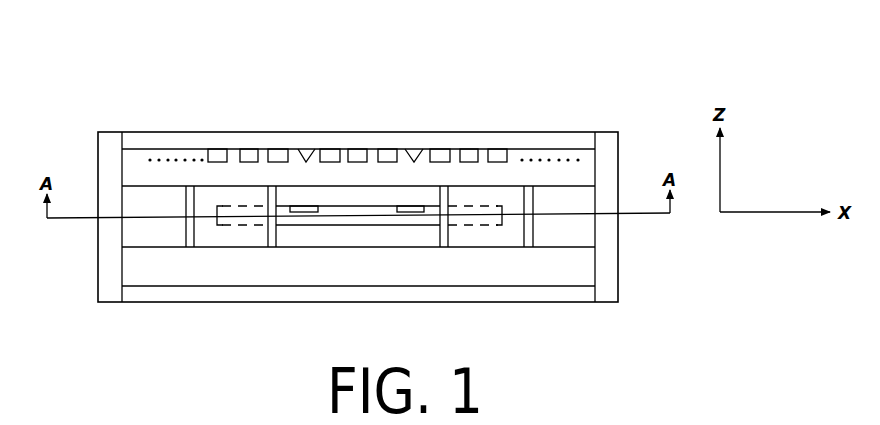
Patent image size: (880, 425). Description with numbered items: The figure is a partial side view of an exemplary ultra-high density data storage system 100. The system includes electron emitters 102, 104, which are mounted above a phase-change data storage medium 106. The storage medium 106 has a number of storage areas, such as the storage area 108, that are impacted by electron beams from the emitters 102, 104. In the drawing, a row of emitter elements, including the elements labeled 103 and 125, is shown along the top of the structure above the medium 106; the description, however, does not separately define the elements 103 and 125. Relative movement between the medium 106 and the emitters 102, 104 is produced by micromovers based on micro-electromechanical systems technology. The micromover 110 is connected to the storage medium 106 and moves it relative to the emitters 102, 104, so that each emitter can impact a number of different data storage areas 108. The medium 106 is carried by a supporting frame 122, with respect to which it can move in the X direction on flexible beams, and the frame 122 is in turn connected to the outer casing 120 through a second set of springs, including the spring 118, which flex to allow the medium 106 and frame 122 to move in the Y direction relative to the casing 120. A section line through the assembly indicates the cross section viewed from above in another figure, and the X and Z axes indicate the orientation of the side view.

The ultra-high density data storage system 100 is at (89, 72).
The electron emitter 102 is at (307, 149).
The electrodes 103 is at (278, 148).
The electron emitter 104 is at (413, 149).
The phase-change data storage medium 106 is at (228, 226).
The storage area 108 is at (292, 205).
The micromover 110 is at (157, 248).
The spring 118 is at (564, 216).
The outer casing 120 is at (610, 267).
The supporting frame 122 is at (522, 197).
The electrode 125 is at (363, 149).